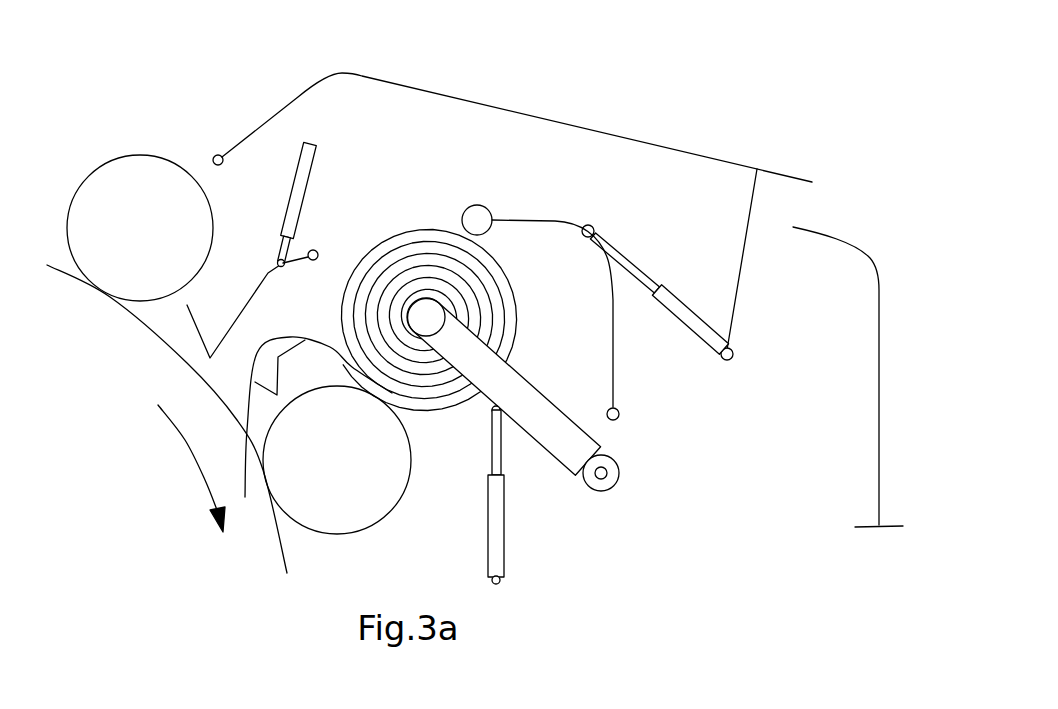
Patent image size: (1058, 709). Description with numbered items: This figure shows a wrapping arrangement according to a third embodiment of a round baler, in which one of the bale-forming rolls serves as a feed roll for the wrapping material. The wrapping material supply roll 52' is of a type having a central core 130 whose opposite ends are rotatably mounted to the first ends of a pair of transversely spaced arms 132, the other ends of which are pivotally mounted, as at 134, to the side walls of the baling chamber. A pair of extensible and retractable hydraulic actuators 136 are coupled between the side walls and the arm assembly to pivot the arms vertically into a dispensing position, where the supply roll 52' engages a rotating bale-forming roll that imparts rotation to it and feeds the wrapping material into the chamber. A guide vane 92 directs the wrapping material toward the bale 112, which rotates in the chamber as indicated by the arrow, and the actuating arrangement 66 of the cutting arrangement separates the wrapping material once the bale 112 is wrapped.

The wrapping material supply roll 52' is at (429, 299).
The actuating arrangement 66 is at (323, 177).
The guide vane 92 is at (167, 419).
The bale 112 is at (80, 486).
The central core 130 is at (427, 300).
The arms 132 is at (543, 413).
The pivot mounting 134 is at (600, 465).
The hydraulic actuators 136 is at (498, 512).